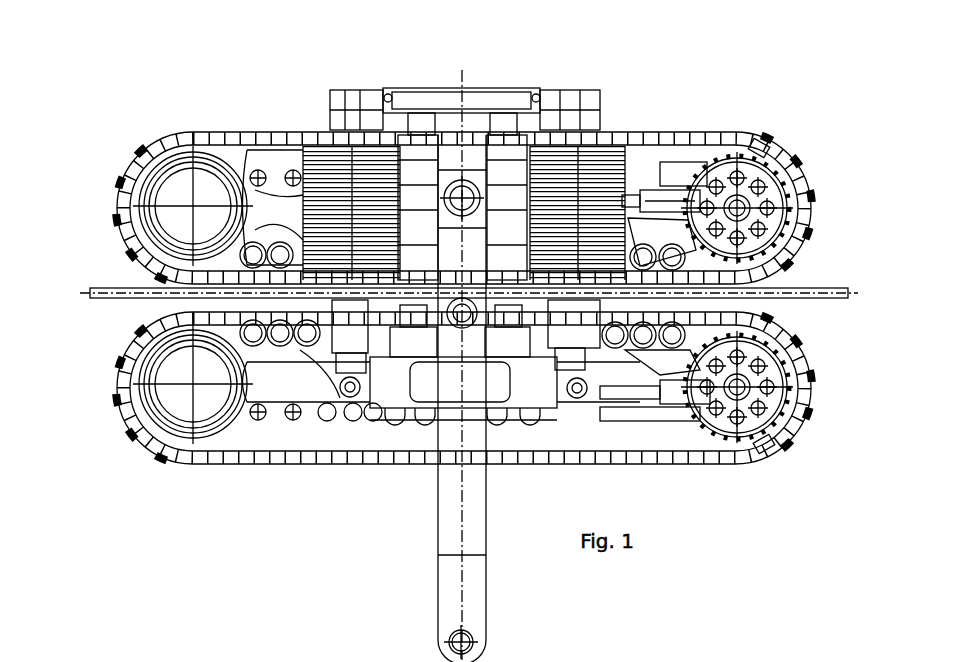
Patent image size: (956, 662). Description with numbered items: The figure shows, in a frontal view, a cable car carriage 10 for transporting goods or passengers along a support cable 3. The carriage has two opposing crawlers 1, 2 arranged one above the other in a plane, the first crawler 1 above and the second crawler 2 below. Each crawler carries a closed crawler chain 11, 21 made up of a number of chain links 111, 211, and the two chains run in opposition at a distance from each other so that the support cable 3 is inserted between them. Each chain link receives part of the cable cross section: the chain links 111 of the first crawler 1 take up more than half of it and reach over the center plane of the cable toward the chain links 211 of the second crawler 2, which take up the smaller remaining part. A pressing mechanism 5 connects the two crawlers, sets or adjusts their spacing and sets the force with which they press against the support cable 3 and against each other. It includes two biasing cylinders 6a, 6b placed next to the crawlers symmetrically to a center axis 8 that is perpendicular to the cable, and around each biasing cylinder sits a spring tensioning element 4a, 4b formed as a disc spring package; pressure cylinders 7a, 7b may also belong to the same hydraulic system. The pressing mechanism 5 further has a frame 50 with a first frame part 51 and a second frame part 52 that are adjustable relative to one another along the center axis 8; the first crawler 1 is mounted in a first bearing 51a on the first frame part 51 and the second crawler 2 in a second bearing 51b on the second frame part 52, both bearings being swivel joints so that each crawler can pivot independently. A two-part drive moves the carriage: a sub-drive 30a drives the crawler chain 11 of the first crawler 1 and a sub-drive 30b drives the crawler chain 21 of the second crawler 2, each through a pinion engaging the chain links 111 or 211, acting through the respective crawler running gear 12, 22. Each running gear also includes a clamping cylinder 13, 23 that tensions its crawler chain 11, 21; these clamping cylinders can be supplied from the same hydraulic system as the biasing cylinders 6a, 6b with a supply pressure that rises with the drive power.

The first crawler 1 is at (127, 143).
The second crawler 2 is at (88, 432).
The support cable 3 is at (110, 298).
The spring tensioning element 4a is at (337, 163).
The spring tensioning element 4b is at (613, 153).
The pressing mechanism 5 is at (443, 227).
The biasing cylinder 6a is at (338, 323).
The biasing cylinder 6b is at (565, 330).
The pressure cylinder 7a is at (417, 222).
The pressure cylinder 7b is at (505, 222).
The center axis 8 is at (463, 98).
The cable car carriage 10 is at (222, 510).
The crawler chain 11 is at (113, 185).
The crawler running gear 12 is at (690, 333).
The clamping cylinder 13 is at (657, 177).
The crawler chain 21 is at (110, 380).
The crawler running gear 22 is at (667, 218).
The clamping cylinder 23 is at (665, 393).
The sub-drive 30a is at (182, 212).
The sub-drive 30b is at (180, 395).
The frame 50 is at (407, 88).
The first frame part 51 is at (471, 176).
The first bearing 51a is at (458, 197).
The second bearing 51b is at (458, 315).
The second frame part 52 is at (515, 372).
The chain links 111 is at (760, 150).
The chain links 211 is at (763, 447).